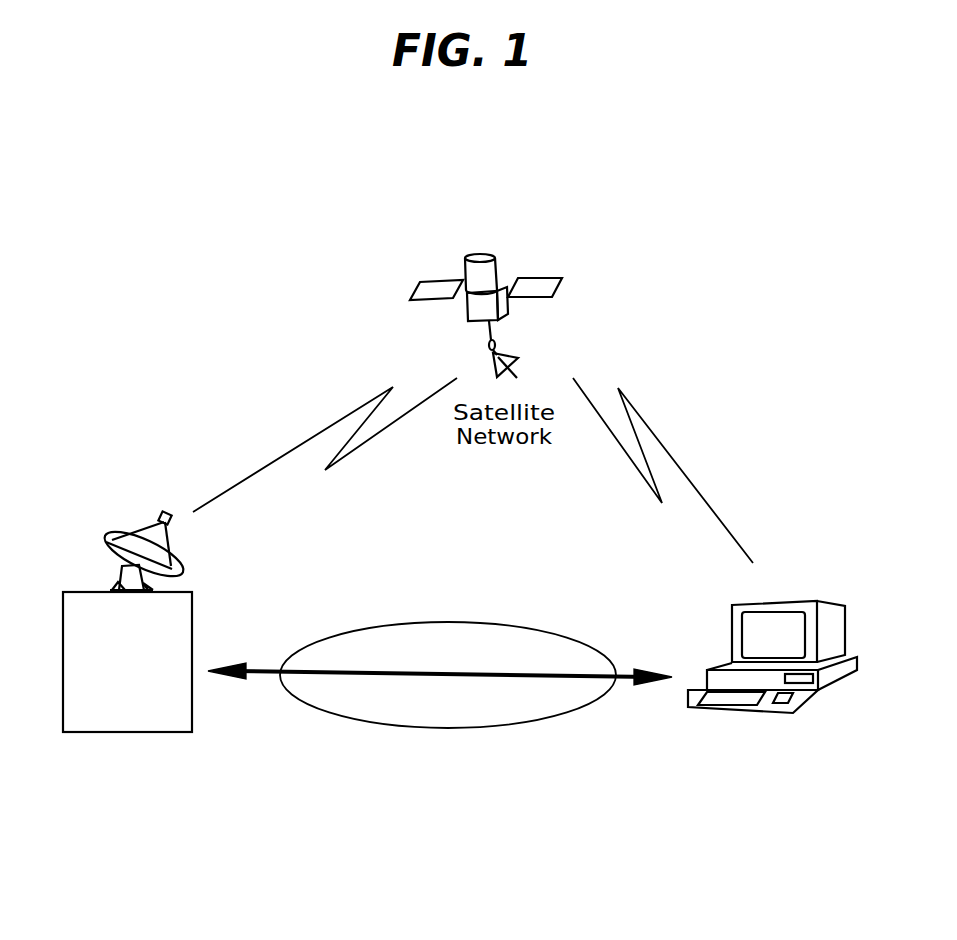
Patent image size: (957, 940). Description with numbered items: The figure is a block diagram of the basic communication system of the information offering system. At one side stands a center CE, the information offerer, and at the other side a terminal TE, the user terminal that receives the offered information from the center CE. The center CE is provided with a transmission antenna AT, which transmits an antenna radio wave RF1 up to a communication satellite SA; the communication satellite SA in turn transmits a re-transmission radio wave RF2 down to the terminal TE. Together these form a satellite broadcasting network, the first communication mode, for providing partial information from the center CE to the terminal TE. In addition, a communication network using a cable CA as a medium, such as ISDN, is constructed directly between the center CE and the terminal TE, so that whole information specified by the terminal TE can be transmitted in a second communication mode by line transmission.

The communication satellite SA is at (480, 256).
The antenna radio wave RF1 is at (278, 458).
The re-transmission radio wave RF2 is at (688, 478).
The transmission antenna AT is at (126, 532).
The center CE is at (192, 722).
The cable CA is at (373, 678).
The terminal TE is at (792, 604).